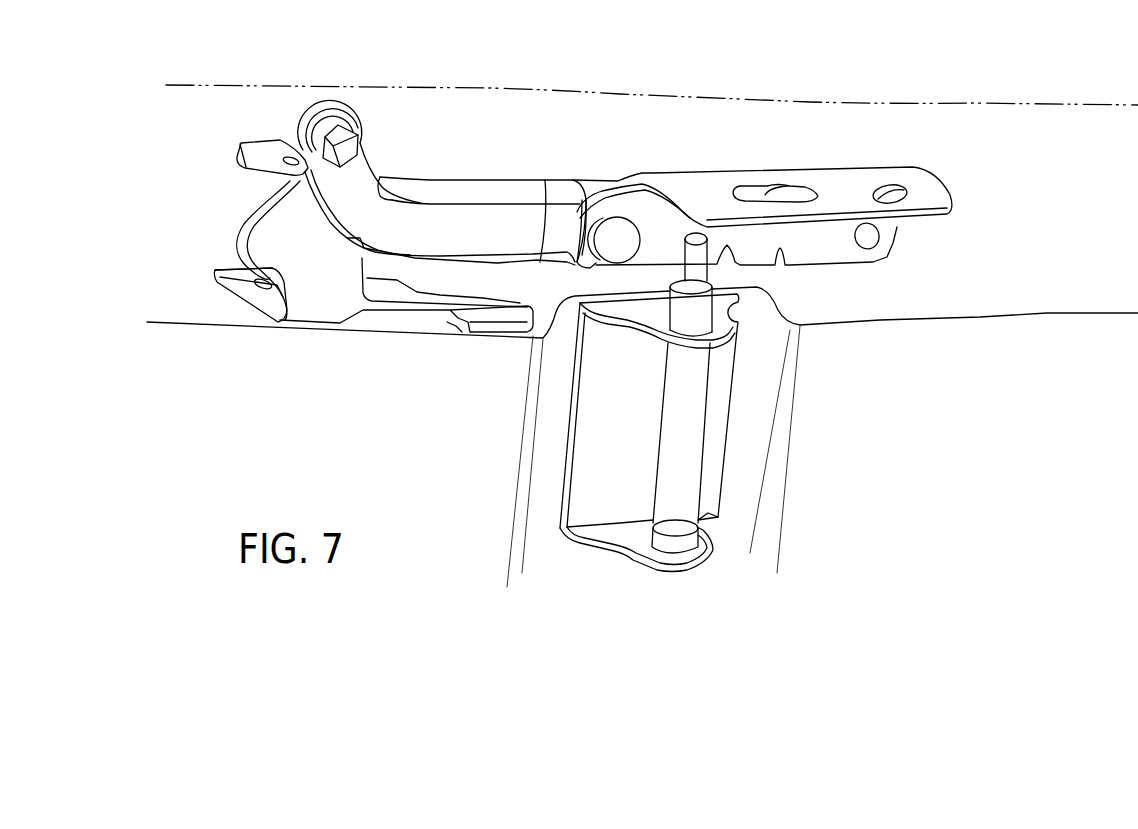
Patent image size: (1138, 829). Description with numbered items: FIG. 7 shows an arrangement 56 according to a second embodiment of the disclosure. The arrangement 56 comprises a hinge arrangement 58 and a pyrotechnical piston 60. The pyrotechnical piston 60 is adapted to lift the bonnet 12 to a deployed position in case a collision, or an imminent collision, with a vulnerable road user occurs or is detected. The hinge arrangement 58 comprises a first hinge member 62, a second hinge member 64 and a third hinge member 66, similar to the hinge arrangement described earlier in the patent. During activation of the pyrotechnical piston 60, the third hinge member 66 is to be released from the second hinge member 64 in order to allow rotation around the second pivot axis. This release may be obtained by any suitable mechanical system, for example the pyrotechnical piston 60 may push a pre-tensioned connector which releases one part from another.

The bonnet 12 is at (965, 127).
The arrangement 56 is at (660, 133).
The hinge arrangement 58 is at (220, 200).
The pyrotechnical piston 60 is at (685, 435).
The first hinge member 62 is at (323, 283).
The second hinge member 64 is at (422, 216).
The third hinge member 66 is at (827, 183).